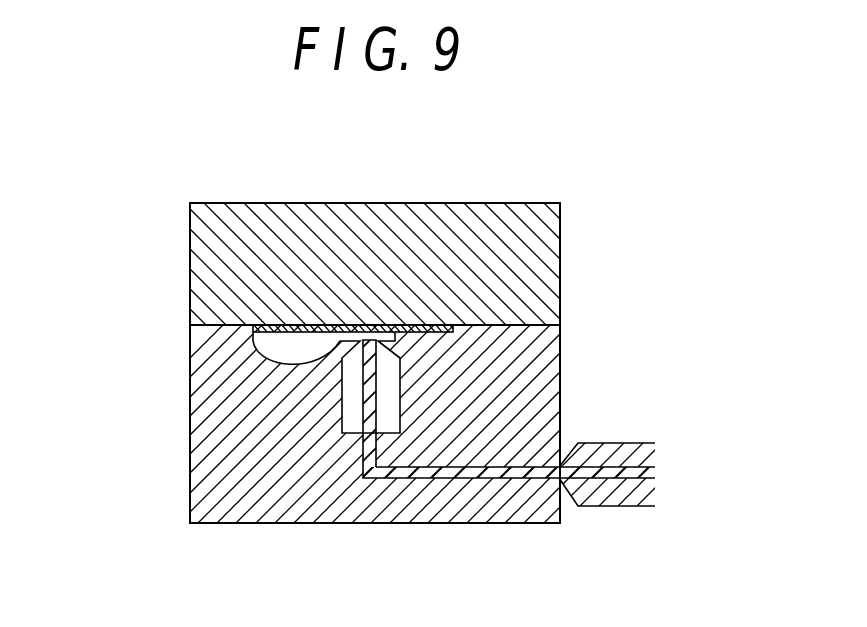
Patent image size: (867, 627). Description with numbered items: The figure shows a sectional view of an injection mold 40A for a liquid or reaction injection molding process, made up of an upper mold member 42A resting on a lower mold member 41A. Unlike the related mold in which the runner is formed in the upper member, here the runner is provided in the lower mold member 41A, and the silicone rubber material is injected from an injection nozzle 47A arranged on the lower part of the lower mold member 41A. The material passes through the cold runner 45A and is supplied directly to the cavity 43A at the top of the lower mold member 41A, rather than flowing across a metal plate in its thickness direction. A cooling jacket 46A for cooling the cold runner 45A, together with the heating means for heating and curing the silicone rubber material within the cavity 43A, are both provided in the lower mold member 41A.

The injection mold 40A is at (589, 240).
The upper mold member 42A is at (527, 283).
The lower mold member 41A is at (542, 388).
The cavity 43A is at (282, 350).
The cooling jacket 46A is at (350, 407).
The cold runner 45A is at (480, 470).
The injection nozzle 47A is at (620, 493).